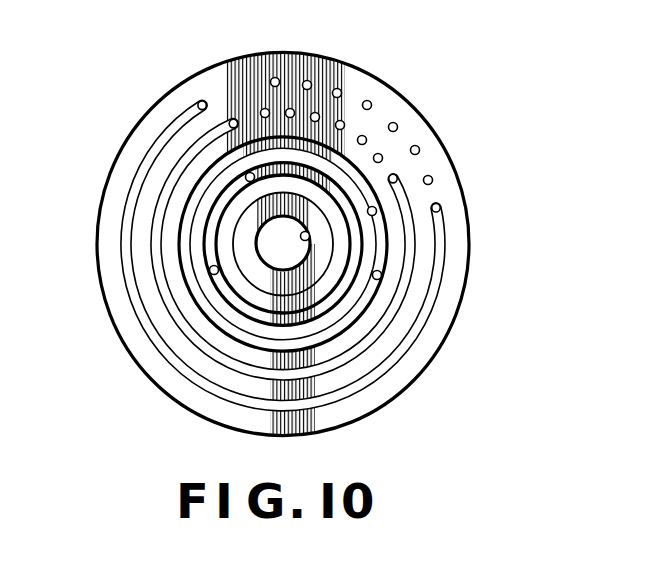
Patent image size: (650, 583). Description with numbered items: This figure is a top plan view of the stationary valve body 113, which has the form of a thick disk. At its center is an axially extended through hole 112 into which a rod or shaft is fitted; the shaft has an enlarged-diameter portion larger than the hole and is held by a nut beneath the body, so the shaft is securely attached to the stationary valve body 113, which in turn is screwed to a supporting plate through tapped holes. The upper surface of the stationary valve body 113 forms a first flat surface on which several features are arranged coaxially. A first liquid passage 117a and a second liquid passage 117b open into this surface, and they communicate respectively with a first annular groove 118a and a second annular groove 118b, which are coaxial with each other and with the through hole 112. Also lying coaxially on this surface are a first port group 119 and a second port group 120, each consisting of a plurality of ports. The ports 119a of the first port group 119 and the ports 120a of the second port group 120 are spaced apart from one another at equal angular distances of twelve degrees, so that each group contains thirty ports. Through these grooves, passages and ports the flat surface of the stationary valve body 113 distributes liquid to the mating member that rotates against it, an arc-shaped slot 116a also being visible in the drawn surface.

The through hole 112 is at (308, 232).
The stationary valve body 113 is at (462, 160).
The arcuate slot 116a is at (446, 207).
The first liquid passage 117a is at (248, 174).
The second liquid passage 117b is at (375, 213).
The first annular groove 118a is at (212, 270).
The second annular groove 118b is at (380, 278).
The first port group 119 is at (290, 96).
The port 119a is at (260, 110).
The second port group 120 is at (352, 80).
The port 120a is at (394, 123).